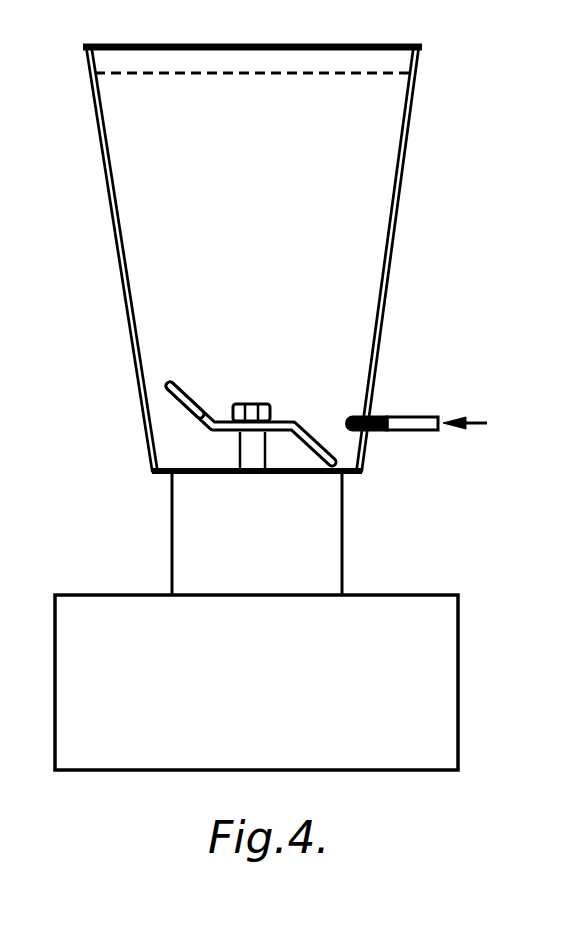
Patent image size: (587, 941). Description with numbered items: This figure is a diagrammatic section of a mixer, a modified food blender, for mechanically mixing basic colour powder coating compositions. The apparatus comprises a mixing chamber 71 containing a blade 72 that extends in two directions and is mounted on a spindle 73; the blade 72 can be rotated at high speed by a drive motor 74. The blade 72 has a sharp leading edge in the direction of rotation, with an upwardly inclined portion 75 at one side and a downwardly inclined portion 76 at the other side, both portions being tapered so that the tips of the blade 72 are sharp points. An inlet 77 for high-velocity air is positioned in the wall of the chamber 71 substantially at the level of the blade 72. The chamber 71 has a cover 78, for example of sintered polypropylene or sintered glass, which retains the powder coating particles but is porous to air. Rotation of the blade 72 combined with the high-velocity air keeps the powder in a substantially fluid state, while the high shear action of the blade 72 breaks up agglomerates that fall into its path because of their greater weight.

The mixing chamber 71 is at (120, 206).
The blade 72 is at (196, 414).
The spindle 73 is at (220, 480).
The drive motor 74 is at (327, 553).
The upwardly inclined portion 75 is at (174, 398).
The downwardly inclined portion 76 is at (345, 446).
The inlet for high-velocity air 77 is at (413, 415).
The cover 78 is at (410, 45).